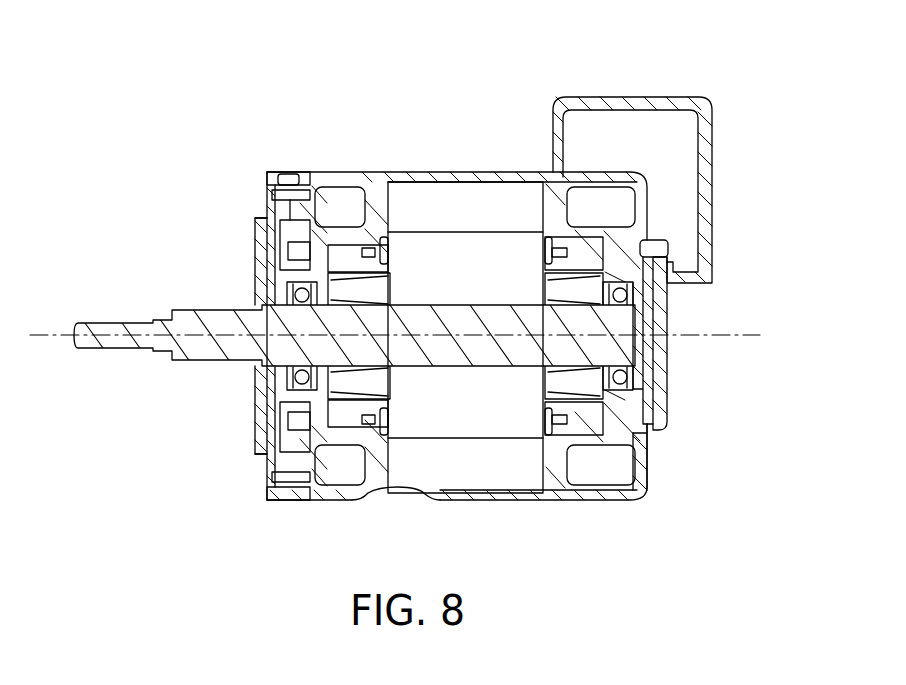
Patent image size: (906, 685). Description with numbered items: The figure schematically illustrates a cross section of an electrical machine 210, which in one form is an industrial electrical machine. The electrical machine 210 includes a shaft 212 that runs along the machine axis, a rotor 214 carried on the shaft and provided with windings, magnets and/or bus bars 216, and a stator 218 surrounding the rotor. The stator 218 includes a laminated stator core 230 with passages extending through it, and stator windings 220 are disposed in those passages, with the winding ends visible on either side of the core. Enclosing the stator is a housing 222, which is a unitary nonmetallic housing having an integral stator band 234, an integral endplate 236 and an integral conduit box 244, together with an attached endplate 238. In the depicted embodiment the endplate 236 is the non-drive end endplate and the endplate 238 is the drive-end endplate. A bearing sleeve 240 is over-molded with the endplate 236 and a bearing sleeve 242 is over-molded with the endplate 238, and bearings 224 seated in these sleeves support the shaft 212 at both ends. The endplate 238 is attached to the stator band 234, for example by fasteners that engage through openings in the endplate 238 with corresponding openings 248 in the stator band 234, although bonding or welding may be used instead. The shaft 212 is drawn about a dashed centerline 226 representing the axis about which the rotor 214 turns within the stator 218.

The electrical machine 210 is at (706, 50).
The shaft 212 is at (116, 322).
The rotor 214 is at (508, 426).
The windings, magnets and/or bus bars 216 is at (625, 490).
The stator 218 is at (540, 532).
The stator windings 220 is at (350, 194).
The housing 222 is at (495, 78).
The bearings 224 is at (270, 400).
The rotation axis 226 is at (53, 338).
The laminated stator core 230 is at (437, 171).
The stator band 234 is at (401, 504).
The endplate 236 is at (648, 440).
The endplate 238 is at (267, 178).
The bearing sleeve 240 is at (661, 360).
The bearing sleeve 242 is at (268, 270).
The conduit box 244 is at (638, 96).
The openings 248 is at (300, 185).